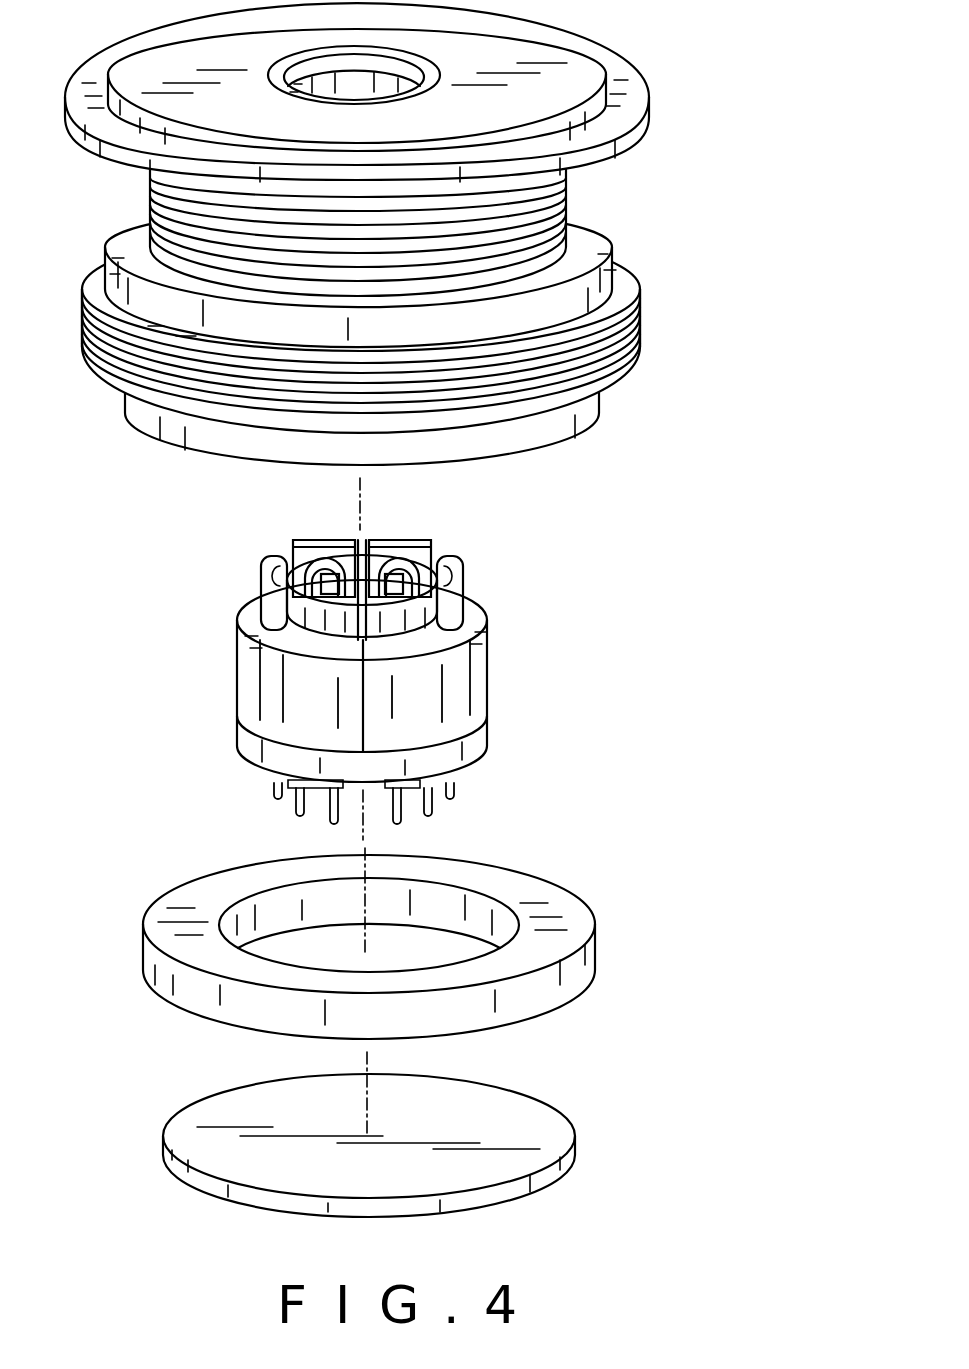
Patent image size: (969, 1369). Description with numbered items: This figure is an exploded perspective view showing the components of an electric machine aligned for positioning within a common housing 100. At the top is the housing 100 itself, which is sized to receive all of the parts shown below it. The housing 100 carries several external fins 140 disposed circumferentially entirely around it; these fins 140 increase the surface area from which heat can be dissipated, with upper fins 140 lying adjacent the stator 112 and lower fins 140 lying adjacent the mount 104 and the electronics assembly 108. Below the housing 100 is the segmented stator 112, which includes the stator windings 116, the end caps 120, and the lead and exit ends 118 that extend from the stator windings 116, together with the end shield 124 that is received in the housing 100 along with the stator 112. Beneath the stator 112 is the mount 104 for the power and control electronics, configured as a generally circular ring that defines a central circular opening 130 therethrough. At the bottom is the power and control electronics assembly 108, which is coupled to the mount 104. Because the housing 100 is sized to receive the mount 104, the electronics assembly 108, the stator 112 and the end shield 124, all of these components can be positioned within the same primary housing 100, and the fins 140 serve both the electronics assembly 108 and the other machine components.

The housing 100 is at (426, 233).
The external fins 140 is at (590, 207).
The stator 112 is at (355, 662).
The stator windings 116 is at (317, 545).
The end caps 120 is at (266, 574).
The end shield 124 is at (240, 734).
The lead and exit ends 118 is at (322, 800).
The mount 104 is at (367, 941).
The central circular opening 130 is at (294, 938).
The power and control electronics assembly 108 is at (577, 1135).